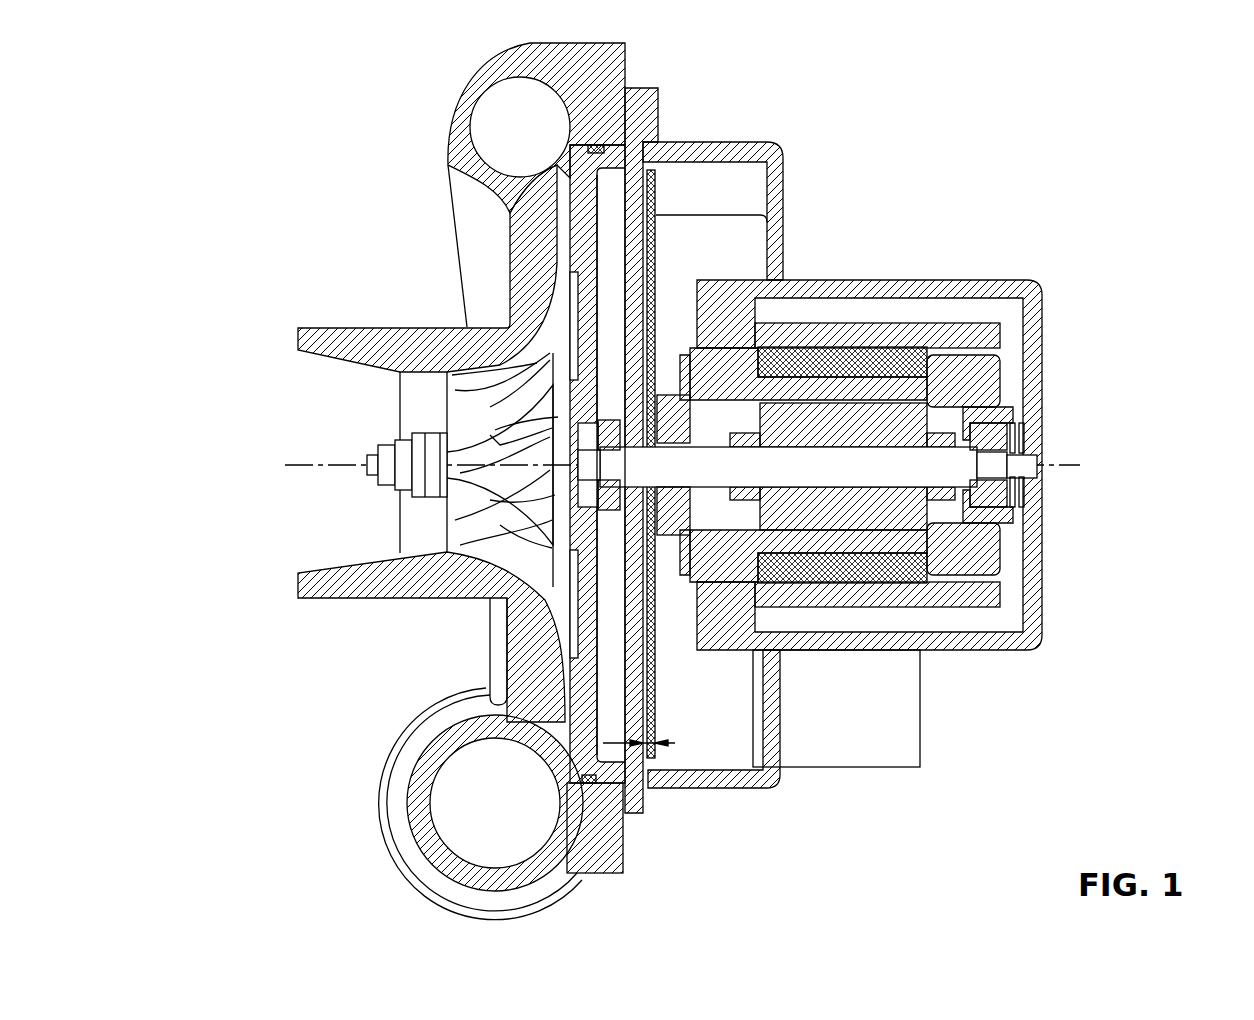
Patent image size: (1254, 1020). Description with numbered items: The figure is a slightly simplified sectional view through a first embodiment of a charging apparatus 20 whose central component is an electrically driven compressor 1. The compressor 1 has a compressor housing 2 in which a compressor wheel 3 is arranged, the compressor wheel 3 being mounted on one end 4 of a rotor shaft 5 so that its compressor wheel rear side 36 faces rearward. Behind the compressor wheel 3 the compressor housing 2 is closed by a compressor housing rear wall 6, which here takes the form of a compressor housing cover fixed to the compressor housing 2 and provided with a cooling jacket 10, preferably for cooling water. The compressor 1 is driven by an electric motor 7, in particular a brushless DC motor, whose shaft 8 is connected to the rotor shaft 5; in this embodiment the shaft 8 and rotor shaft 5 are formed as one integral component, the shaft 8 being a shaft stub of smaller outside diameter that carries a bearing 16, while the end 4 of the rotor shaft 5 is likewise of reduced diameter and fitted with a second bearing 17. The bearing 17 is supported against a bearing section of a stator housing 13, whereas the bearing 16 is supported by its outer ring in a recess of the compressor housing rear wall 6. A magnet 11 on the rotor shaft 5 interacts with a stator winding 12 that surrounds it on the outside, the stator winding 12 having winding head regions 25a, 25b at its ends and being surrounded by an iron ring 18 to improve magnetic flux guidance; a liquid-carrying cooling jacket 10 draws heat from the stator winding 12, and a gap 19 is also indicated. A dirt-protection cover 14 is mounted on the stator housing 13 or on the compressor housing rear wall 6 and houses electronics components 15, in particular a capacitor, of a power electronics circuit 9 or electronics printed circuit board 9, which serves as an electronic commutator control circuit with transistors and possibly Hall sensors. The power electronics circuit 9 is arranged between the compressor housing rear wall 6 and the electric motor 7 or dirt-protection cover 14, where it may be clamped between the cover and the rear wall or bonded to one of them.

The compressor 1 is at (406, 194).
The compressor housing 2 is at (471, 81).
The compressor wheel 3 is at (473, 422).
The end 4 is at (405, 456).
The rotor shaft 5 is at (645, 480).
The compressor housing rear wall 6 is at (641, 112).
The electric motor 7 is at (832, 275).
The shaft 8 is at (1030, 460).
The power electronics circuit 9 is at (656, 188).
The cooling jacket 10 is at (610, 205).
The magnet 11 is at (917, 517).
The stator winding 12 is at (1002, 354).
The stator housing 13 is at (1020, 280).
The dirt-protection cover 14 is at (773, 150).
The electronics components 15 is at (724, 235).
The bearing 16 is at (643, 478).
The bearing 17 is at (1000, 428).
The iron ring 18 is at (900, 572).
The gap 19 is at (653, 778).
The charging apparatus 20 is at (957, 98).
The winding head region 25a is at (965, 355).
The winding head region 25b is at (745, 368).
The compressor wheel rear side 36 is at (573, 567).